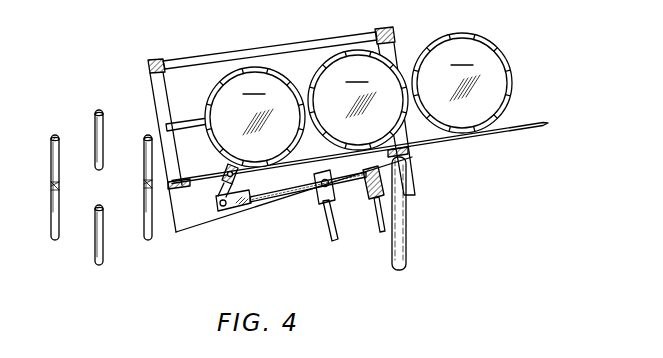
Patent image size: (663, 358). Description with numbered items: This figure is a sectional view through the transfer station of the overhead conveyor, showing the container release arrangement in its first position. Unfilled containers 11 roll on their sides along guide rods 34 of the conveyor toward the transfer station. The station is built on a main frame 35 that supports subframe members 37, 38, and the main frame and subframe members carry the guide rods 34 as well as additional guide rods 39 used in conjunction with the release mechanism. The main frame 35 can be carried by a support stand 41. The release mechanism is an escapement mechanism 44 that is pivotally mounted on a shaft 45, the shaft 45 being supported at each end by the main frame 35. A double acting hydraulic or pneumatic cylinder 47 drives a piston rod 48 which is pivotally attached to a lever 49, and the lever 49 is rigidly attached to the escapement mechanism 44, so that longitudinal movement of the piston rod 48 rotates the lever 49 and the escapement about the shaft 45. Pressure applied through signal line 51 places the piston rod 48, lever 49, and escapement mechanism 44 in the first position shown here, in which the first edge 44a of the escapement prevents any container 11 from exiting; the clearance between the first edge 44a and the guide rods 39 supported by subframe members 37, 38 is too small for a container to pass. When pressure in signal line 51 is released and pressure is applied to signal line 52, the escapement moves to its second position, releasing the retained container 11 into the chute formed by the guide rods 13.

The container 11 is at (361, 99).
The guide rods 13 is at (142, 174).
The guide rods 34 is at (455, 140).
The main frame 35 is at (232, 215).
The subframe member 37 is at (151, 100).
The subframe member 38 is at (395, 45).
The guide rods 39 is at (196, 60).
The support stand 41 is at (408, 242).
The escapement mechanism 44 is at (216, 157).
The first edge 44a is at (224, 140).
The shaft 45 is at (223, 178).
The double acting hydraulic or pneumatic cylinder 47 is at (342, 195).
The piston rod 48 is at (288, 194).
The lever 49 is at (222, 208).
The signal line 51 is at (382, 231).
The signal line 52 is at (334, 240).